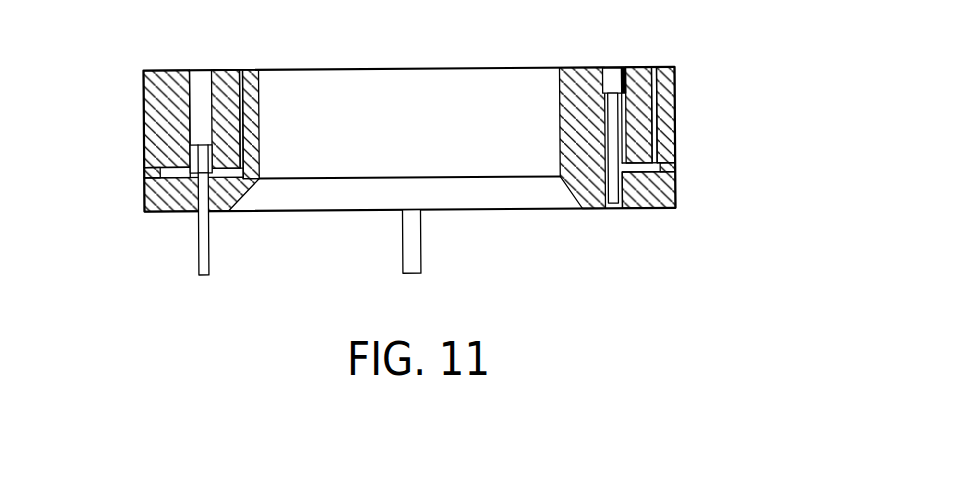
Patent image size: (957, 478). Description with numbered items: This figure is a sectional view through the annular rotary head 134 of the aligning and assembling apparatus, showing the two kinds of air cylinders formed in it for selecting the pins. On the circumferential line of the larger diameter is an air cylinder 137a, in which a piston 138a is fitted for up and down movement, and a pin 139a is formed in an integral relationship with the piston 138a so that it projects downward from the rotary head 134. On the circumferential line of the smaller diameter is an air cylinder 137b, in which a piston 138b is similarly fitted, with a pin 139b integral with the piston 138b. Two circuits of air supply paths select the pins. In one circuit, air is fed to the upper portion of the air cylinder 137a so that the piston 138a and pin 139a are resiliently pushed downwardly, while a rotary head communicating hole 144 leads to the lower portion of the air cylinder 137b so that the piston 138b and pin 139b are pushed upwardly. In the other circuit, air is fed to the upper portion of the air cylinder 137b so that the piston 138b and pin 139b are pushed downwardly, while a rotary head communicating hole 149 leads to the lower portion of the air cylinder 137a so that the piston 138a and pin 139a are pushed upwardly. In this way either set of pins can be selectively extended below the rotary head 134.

The rotary head 134 is at (408, 78).
The air cylinder 137a is at (195, 112).
The air cylinder 137b is at (627, 110).
The piston 138a is at (193, 162).
The piston 138b is at (615, 65).
The pin 139a is at (198, 263).
The pin 139b is at (612, 207).
The rotary head communicating hole 144 is at (656, 154).
The rotary head communicating hole 149 is at (243, 120).